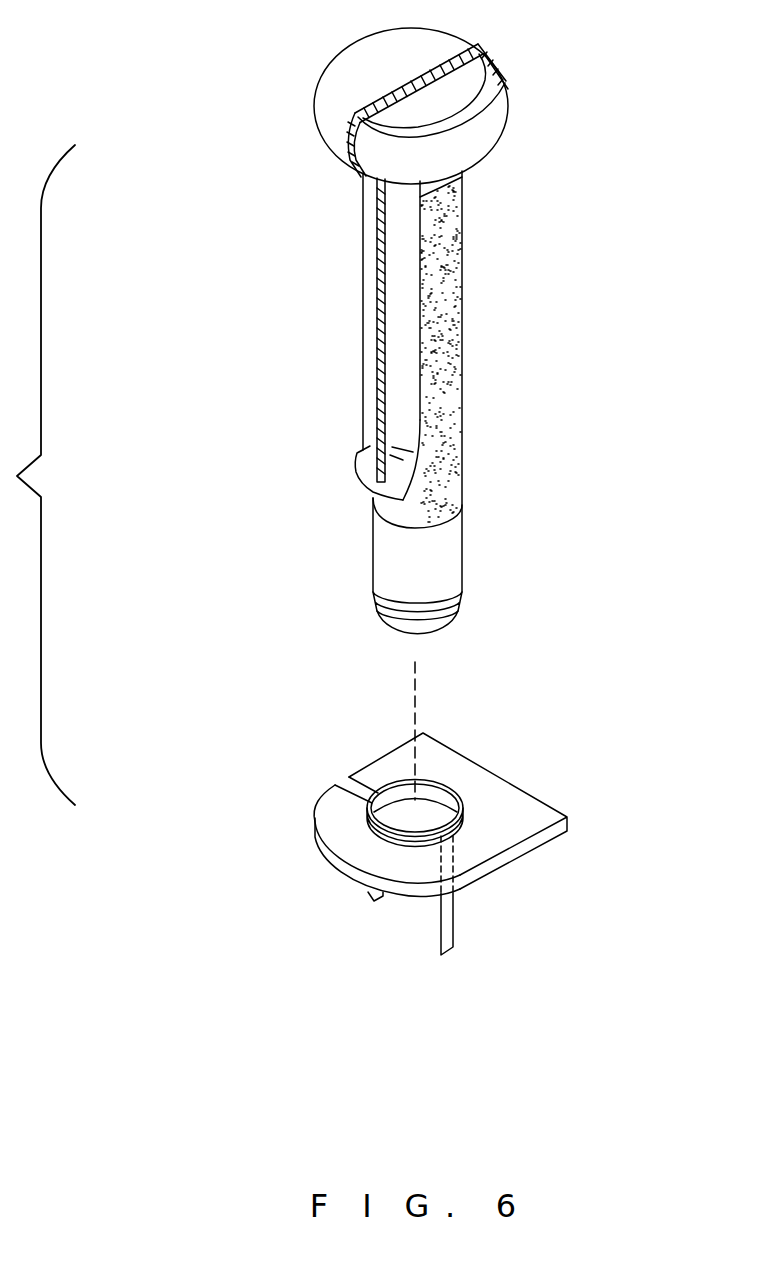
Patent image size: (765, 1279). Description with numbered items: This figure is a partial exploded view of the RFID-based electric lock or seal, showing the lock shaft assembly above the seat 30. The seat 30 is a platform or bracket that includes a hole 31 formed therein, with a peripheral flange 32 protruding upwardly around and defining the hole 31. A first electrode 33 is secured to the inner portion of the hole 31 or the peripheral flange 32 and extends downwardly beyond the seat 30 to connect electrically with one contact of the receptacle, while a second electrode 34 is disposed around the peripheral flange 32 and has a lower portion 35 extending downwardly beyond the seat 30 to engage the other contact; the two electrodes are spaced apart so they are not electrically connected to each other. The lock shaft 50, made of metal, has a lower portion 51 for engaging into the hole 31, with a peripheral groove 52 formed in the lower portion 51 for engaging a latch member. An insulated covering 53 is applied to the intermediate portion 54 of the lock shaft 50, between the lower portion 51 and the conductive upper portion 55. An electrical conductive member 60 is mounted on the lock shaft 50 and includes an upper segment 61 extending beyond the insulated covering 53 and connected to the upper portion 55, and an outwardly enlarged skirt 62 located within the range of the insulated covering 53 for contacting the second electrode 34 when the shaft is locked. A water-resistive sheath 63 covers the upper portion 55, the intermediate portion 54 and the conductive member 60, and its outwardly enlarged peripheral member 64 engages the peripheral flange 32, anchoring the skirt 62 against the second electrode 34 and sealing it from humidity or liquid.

The seat 30 is at (528, 810).
The hole 31 is at (419, 828).
The peripheral flange 32 is at (447, 783).
The first electrode 33 is at (452, 915).
The second electrode 34 is at (350, 782).
The lower portion 35 is at (377, 894).
The lock shaft 50 is at (382, 545).
The lower portion 51 is at (448, 575).
The peripheral groove 52 is at (447, 620).
The insulated covering 53 is at (438, 380).
The intermediate portion 54 is at (462, 513).
The upper portion 55 is at (398, 152).
The electrical conductive member 60 is at (398, 290).
The upper segment 61 is at (398, 203).
The skirt 62 is at (392, 473).
The sheath 63 is at (365, 262).
The peripheral member 64 is at (358, 455).